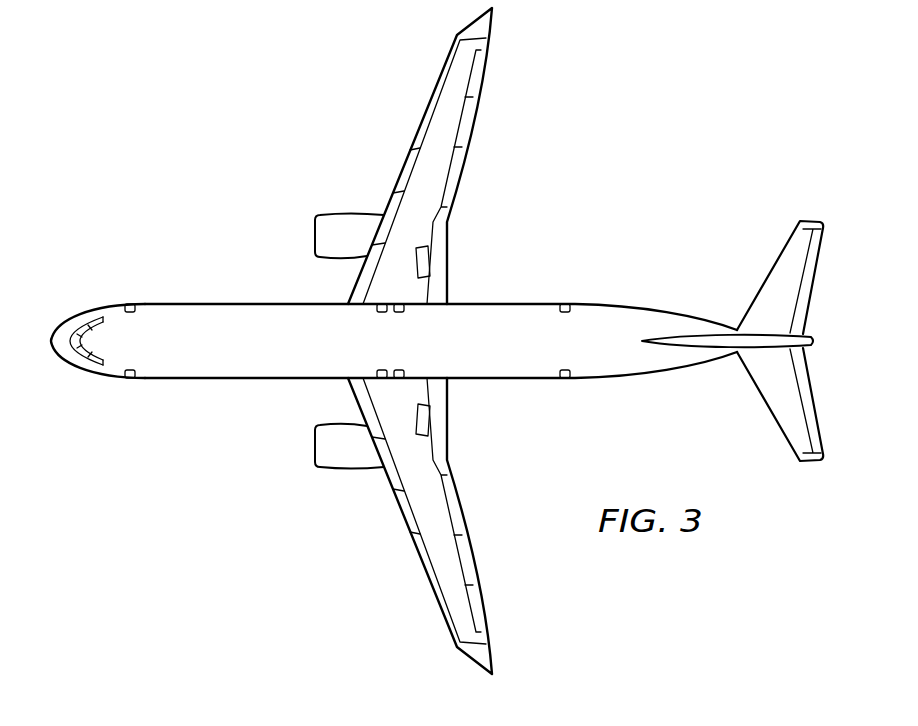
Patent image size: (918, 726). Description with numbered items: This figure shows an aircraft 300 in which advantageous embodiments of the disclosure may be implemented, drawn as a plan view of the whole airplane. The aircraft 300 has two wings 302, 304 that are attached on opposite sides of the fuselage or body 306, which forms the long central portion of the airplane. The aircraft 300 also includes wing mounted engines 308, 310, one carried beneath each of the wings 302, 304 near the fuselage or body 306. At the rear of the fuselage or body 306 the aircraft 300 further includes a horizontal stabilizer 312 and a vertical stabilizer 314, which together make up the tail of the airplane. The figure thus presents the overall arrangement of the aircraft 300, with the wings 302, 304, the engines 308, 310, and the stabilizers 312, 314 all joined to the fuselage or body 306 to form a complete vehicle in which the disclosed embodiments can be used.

The aircraft 300 is at (302, 126).
The wing 302 is at (402, 170).
The wing 304 is at (402, 510).
The fuselage or body 306 is at (225, 304).
The wing mounted engine 308 is at (315, 233).
The wing mounted engine 310 is at (315, 450).
The horizontal stabilizer 312 is at (810, 295).
The vertical stabilizer 314 is at (800, 348).